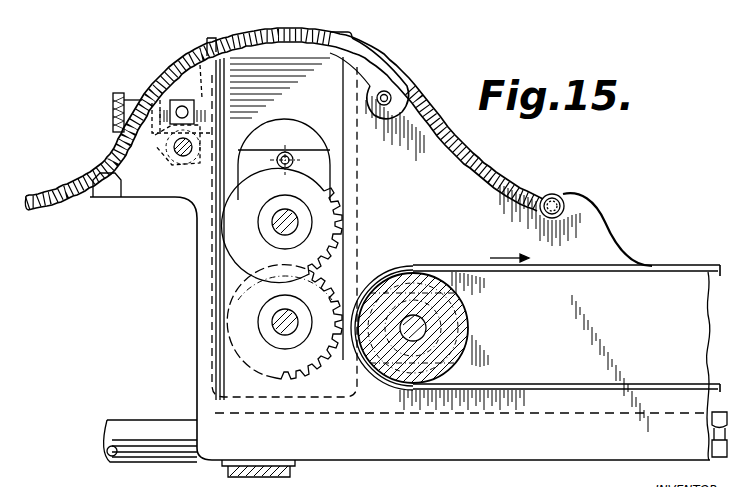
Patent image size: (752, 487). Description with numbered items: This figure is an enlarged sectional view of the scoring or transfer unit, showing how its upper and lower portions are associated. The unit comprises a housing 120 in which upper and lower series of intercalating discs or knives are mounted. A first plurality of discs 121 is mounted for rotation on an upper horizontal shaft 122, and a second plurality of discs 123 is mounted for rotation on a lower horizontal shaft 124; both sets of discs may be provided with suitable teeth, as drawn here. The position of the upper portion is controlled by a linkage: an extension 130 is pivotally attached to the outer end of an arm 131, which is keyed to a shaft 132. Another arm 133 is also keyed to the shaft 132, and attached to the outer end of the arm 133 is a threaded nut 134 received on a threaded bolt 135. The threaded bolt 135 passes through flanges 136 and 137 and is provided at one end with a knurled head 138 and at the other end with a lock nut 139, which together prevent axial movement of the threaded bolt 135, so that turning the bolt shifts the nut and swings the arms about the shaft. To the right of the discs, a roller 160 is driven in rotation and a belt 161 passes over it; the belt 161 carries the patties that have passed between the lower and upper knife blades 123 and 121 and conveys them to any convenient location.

The housing 120 is at (372, 60).
The first plurality of discs 121 is at (344, 211).
The upper horizontal shaft 122 is at (280, 217).
The second plurality of discs 123 is at (318, 372).
The lower horizontal shaft 124 is at (278, 320).
The extension 130 is at (291, 157).
The arm 131 is at (264, 155).
The shaft 132 is at (184, 160).
The arm 133 is at (170, 150).
The threaded nut 134 is at (178, 96).
The threaded bolt 135 is at (200, 56).
The flange 136 is at (150, 104).
The flange 137 is at (212, 38).
The knurled head 138 is at (112, 108).
The lock nut 139 is at (233, 106).
The roller 160 is at (462, 329).
The belt 161 is at (549, 272).